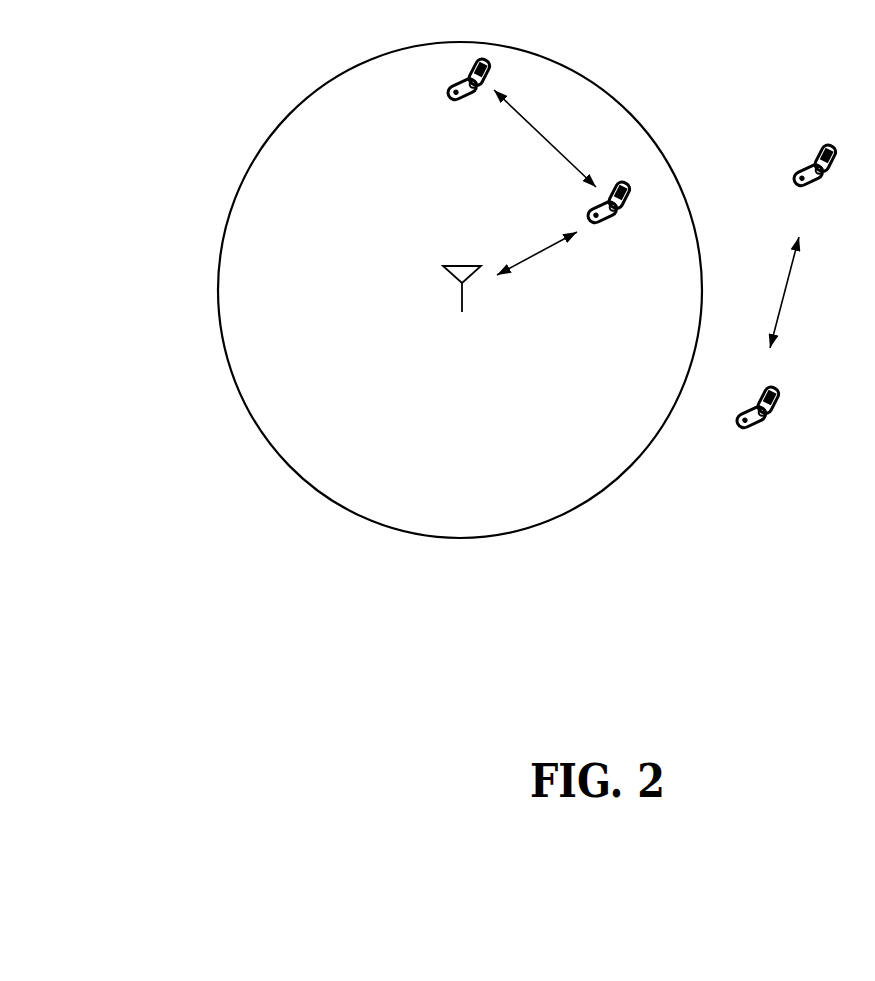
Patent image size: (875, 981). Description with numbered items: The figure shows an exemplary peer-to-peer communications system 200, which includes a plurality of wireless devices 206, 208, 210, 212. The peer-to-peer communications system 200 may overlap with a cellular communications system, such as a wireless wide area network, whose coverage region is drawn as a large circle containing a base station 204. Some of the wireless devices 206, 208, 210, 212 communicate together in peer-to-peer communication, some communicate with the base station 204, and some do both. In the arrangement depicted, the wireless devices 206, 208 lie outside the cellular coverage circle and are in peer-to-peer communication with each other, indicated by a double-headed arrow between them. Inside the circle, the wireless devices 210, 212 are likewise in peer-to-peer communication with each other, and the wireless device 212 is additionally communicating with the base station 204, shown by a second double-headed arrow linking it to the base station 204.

The peer-to-peer communications system 200 is at (172, 77).
The base station 204 is at (462, 307).
The wireless device 206 is at (815, 181).
The wireless device 208 is at (758, 426).
The wireless device 210 is at (469, 96).
The wireless device 212 is at (609, 218).